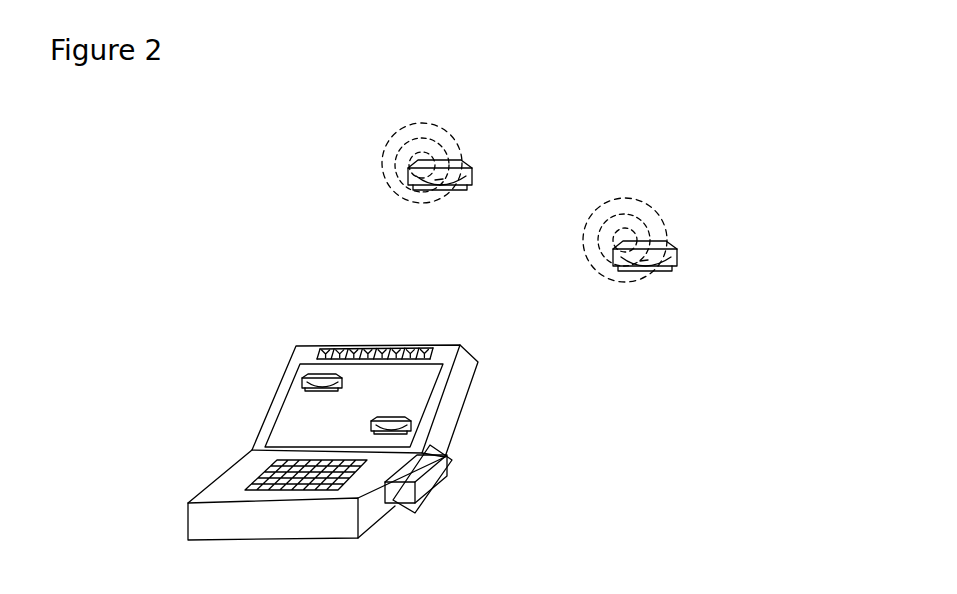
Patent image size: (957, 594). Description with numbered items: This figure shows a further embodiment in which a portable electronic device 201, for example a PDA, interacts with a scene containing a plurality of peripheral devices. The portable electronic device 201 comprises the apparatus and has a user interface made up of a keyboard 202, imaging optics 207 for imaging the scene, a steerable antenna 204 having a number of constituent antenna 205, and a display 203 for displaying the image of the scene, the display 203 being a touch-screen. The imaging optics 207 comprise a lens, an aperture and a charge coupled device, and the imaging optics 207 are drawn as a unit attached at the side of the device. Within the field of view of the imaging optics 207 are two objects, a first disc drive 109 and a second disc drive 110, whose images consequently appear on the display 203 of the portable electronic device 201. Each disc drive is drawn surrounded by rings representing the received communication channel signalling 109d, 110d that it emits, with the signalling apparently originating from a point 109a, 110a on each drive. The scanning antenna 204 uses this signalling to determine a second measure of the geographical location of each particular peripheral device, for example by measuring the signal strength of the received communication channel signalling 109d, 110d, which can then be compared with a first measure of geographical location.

The first disc drive 109 is at (438, 167).
The wireless device antenna 109a is at (420, 158).
The received communication channel signalling 109d is at (383, 165).
The second disc drive 110 is at (670, 263).
The wireless device antenna 110a is at (623, 243).
The received communication channel signalling 110d is at (653, 213).
The portable electronic device 201 is at (333, 428).
The keyboard 202 is at (247, 477).
The display 203 is at (292, 407).
The steerable antenna 204 is at (340, 356).
The constituent antenna 205 is at (432, 353).
The imaging optics 207 is at (430, 485).